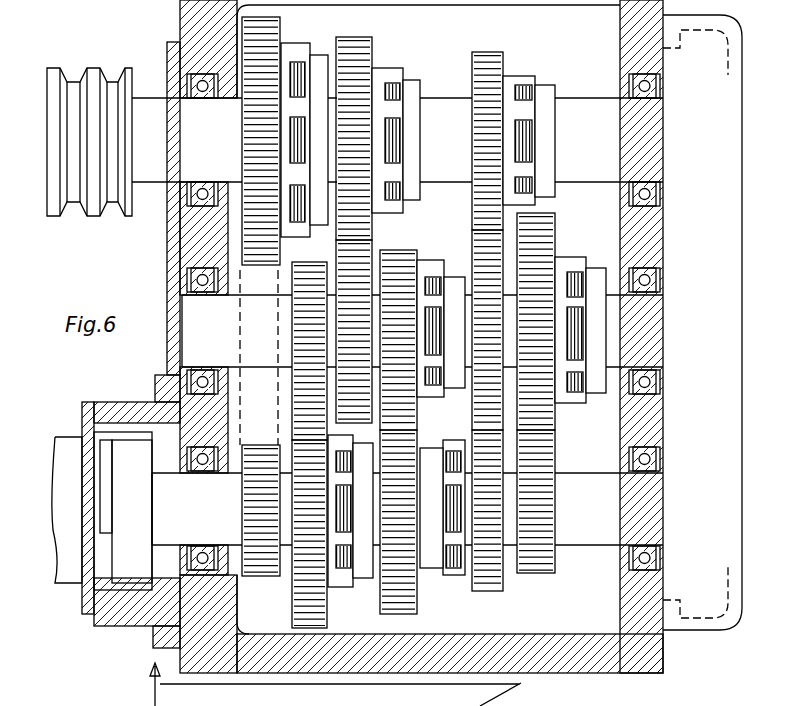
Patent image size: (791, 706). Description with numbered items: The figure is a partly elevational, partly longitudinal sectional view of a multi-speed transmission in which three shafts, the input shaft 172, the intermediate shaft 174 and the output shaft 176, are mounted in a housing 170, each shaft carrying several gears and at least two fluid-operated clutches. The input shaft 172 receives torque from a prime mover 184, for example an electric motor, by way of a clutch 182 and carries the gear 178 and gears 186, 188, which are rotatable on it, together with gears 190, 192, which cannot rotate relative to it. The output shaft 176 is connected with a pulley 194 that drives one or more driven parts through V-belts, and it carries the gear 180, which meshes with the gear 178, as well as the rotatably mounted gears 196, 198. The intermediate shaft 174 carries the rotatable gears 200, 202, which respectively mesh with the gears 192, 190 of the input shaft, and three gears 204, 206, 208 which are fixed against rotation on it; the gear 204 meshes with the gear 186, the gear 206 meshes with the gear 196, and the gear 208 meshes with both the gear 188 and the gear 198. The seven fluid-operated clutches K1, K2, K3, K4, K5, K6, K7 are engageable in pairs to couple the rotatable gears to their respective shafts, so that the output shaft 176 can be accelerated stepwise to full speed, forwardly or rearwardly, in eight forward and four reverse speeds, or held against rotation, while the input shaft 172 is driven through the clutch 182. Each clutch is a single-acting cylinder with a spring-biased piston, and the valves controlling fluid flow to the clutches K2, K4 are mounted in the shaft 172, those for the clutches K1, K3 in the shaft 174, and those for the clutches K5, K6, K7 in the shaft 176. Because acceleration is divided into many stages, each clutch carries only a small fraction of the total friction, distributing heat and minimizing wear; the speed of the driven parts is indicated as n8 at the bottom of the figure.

The housing 170 is at (620, 8).
The input shaft 172 is at (645, 508).
The intermediate shaft 174 is at (640, 335).
The output shaft 176 is at (640, 150).
The gear 178 is at (260, 570).
The gear 180 is at (245, 25).
The clutch 182 is at (135, 575).
The prime mover 184 is at (55, 575).
The gear 186 is at (325, 615).
The gear 188 is at (487, 583).
The gear 190 is at (545, 565).
The gear 192 is at (405, 598).
The pulley 194 is at (60, 70).
The gear 196 is at (355, 45).
The gear 198 is at (485, 62).
The gear 200 is at (398, 268).
The gear 202 is at (553, 222).
The gear 204 is at (290, 268).
The gear 206 is at (360, 272).
The gear 208 is at (482, 245).
The fluid-operated clutch K1 is at (580, 318).
The fluid-operated clutch K2 is at (442, 494).
The fluid-operated clutch K3 is at (441, 318).
The fluid-operated clutch K4 is at (350, 524).
The fluid-operated clutch K5 is at (529, 129).
The fluid-operated clutch K6 is at (396, 130).
The fluid-operated clutch K7 is at (304, 131).
The output speed n8 is at (319, 684).